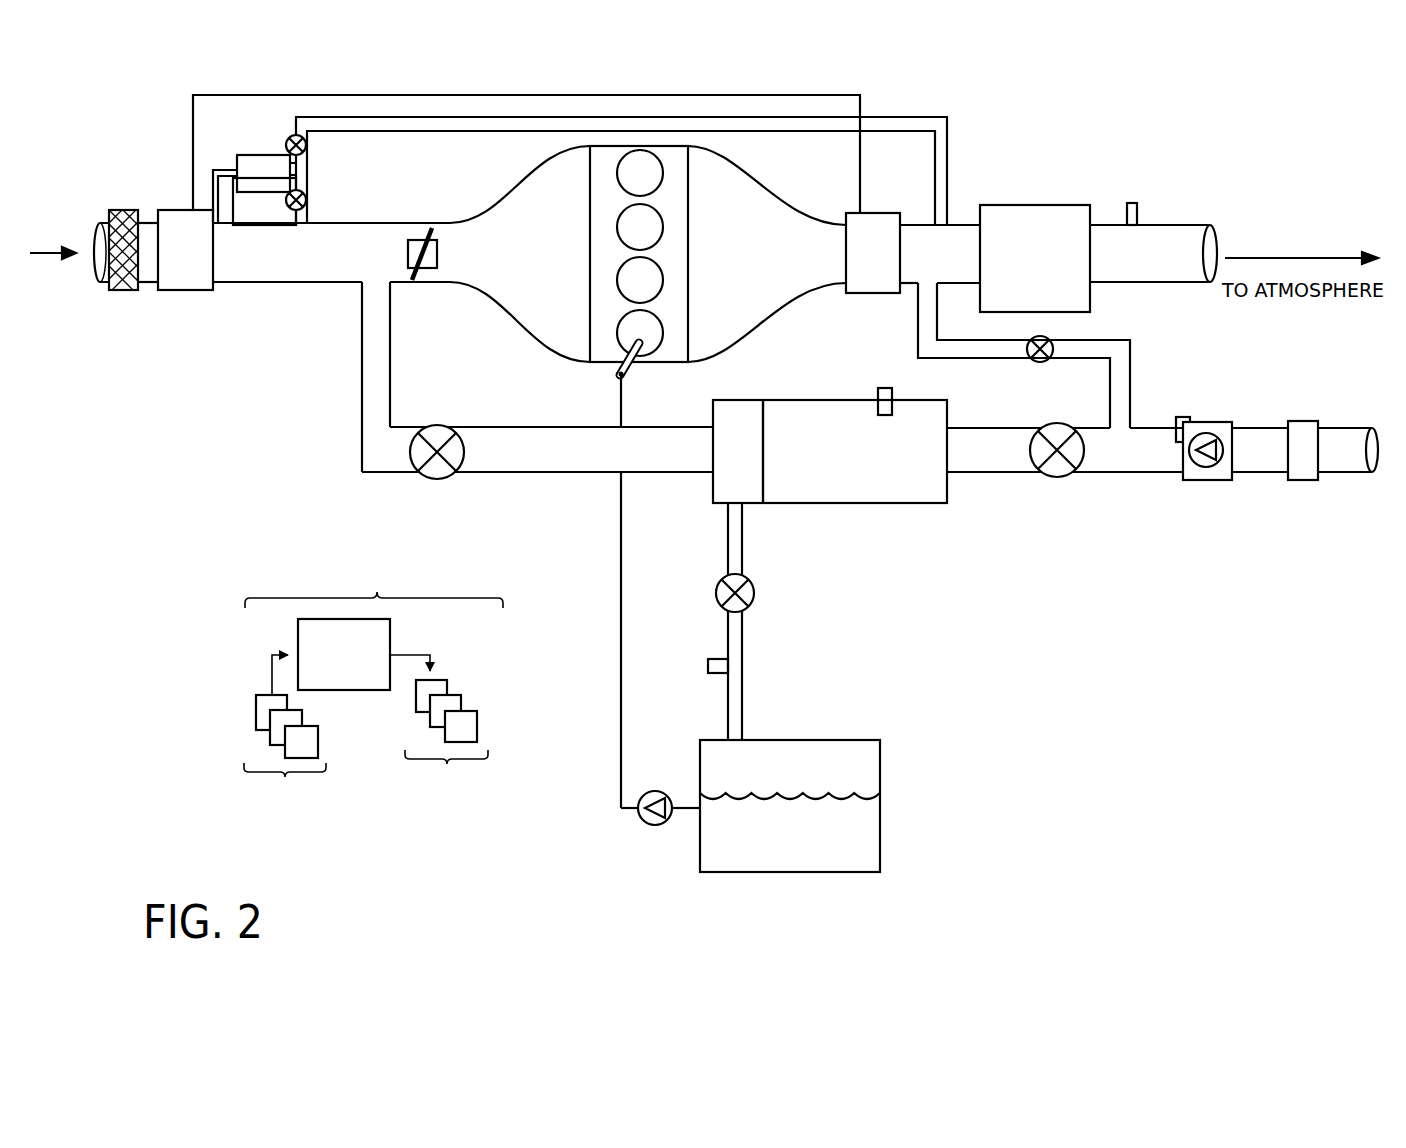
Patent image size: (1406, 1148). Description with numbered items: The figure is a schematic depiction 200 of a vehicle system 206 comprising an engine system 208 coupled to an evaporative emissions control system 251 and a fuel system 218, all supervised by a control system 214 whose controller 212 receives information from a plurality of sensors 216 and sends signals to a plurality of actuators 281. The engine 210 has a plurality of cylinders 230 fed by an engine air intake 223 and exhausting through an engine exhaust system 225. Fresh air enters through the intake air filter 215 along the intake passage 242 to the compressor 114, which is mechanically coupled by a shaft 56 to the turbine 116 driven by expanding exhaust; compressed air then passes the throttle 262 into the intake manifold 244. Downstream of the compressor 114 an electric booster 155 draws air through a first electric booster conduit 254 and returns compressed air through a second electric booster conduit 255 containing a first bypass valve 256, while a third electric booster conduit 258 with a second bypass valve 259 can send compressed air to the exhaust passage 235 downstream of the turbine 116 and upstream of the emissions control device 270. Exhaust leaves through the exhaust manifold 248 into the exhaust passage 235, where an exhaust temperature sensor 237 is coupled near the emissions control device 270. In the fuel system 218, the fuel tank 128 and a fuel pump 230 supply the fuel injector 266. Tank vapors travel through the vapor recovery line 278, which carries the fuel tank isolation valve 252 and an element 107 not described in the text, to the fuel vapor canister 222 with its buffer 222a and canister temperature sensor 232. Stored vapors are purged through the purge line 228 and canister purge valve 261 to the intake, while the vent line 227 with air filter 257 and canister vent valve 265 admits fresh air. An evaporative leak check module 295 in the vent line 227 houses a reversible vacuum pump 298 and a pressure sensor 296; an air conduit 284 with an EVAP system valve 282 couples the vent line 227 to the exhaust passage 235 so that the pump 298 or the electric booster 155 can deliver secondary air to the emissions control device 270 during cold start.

The shaft 56 is at (365, 95).
The fuel tank pressure transducer 107 is at (708, 665).
The compressor 114 is at (185, 250).
The turbine 116 is at (873, 253).
The fuel tank 128 is at (880, 790).
The electric booster 155 is at (266, 173).
The schematic depiction 200 is at (1325, 131).
The vehicle system 206 is at (152, 153).
The engine system 208 is at (1106, 135).
The engine 210 is at (658, 485).
The controller 212 is at (344, 654).
The control system 214 is at (373, 683).
The intake air filter 215 is at (123, 210).
The sensors 216 is at (285, 738).
The fuel system 218 is at (968, 812).
The fuel vapor canister 222 is at (947, 422).
The buffer 222a is at (735, 400).
The engine air intake 223 is at (487, 197).
The engine exhaust system 225 is at (886, 106).
The vent line 227 is at (974, 461).
The purge line 228 is at (529, 463).
The cylinders / fuel pump 230 is at (662, 170).
The canister temperature sensor 232 is at (885, 388).
The exhaust passage 235 is at (1165, 225).
The exhaust temperature sensor 237 is at (1126, 215).
The intake passage 242 is at (343, 287).
The intake manifold 244 is at (517, 268).
The exhaust manifold 248 is at (747, 268).
The evaporative emissions control system 251 is at (1368, 378).
The fuel tank isolation valve 252 is at (720, 607).
The first electric booster conduit 254 is at (217, 183).
The second electric booster conduit 255 is at (264, 201).
The first bypass valve 256 is at (308, 206).
The air filter 257 is at (1308, 422).
The third electric booster conduit 258 is at (292, 117).
The second bypass valve 259 is at (310, 145).
The canister purge valve 261 is at (437, 427).
The throttle 262 is at (438, 262).
The canister vent valve 265 is at (1057, 477).
The fuel injector 266 is at (630, 367).
The emissions control device 270 is at (1025, 205).
The vapor recovery line 278 is at (728, 537).
The actuators 281 is at (439, 731).
The EVAP system valve 282 is at (1040, 363).
The air conduit 284 is at (1130, 364).
The evaporative leak check module 295 is at (1222, 458).
The pressure sensor 296 is at (1181, 415).
The vacuum pump 298 is at (1200, 468).